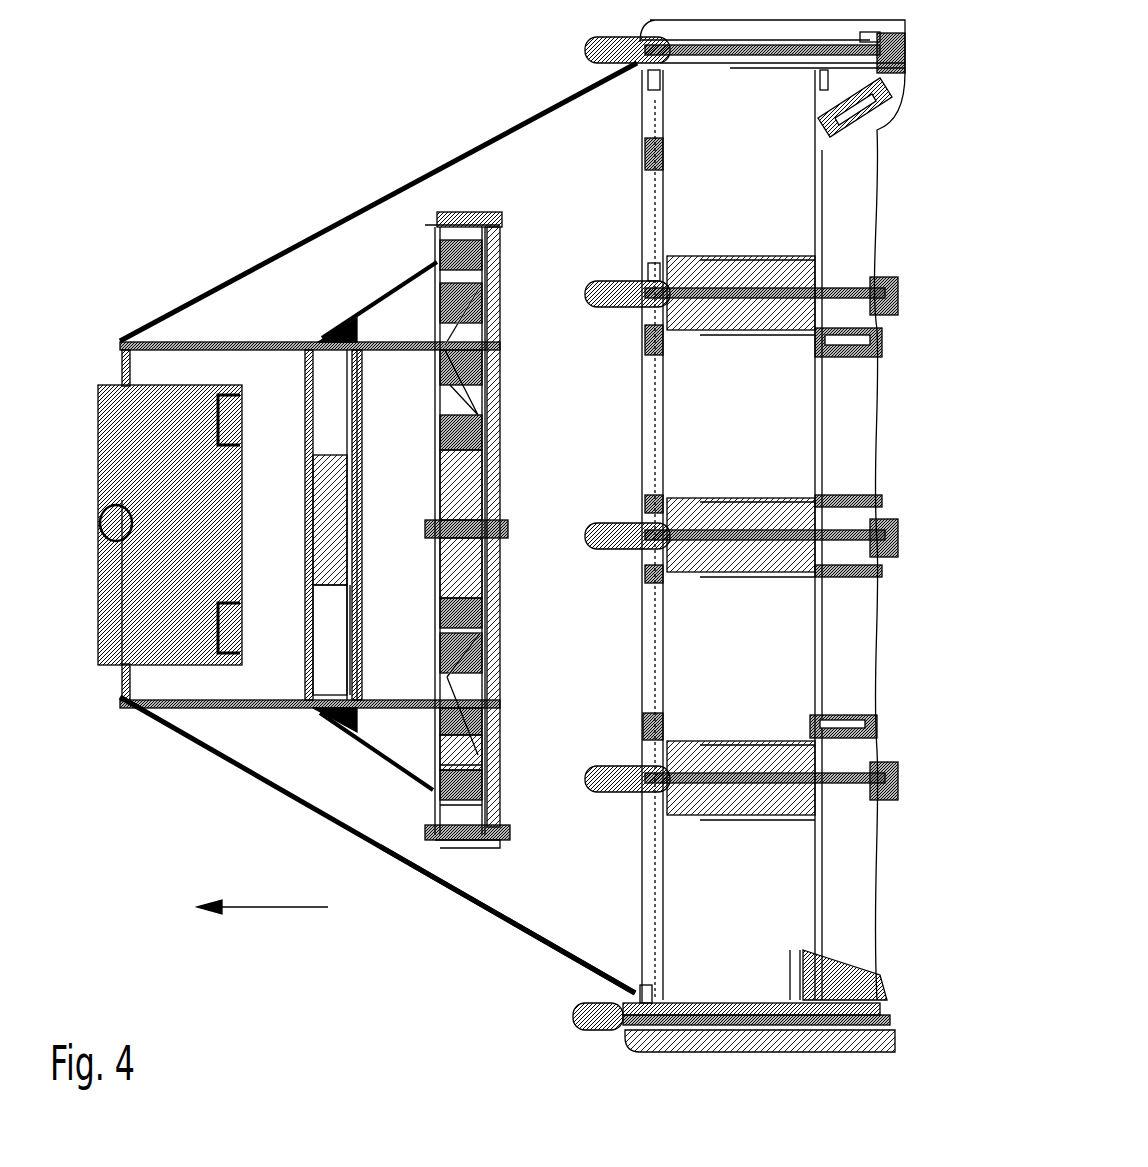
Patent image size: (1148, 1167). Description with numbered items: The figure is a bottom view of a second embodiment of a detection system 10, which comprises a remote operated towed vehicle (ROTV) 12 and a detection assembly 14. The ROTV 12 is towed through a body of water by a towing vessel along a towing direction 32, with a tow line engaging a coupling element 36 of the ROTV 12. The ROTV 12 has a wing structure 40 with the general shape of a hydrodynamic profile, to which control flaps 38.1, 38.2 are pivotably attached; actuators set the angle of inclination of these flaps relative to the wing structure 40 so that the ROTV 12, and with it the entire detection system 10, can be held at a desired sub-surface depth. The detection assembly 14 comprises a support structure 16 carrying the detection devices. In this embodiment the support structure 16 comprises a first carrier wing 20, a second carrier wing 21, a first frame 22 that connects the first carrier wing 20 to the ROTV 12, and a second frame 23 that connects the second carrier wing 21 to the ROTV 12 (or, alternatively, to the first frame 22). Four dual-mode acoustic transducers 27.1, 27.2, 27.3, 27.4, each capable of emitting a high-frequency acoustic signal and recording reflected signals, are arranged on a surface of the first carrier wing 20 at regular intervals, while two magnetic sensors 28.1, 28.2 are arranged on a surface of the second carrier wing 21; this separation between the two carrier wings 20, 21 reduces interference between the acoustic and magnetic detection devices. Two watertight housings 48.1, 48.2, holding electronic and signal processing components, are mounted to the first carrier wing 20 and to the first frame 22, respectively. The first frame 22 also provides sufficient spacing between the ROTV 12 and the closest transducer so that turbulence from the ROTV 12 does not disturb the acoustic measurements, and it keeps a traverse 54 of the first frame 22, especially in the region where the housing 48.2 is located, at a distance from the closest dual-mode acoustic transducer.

The detection system 10 is at (280, 78).
The remote operated towed vehicle (ROTV) 12 is at (104, 370).
The detection assembly 14 is at (512, 65).
The support structure 16 is at (245, 780).
The first carrier wing 20 is at (497, 570).
The second carrier wing 21 is at (875, 200).
The first frame 22 is at (370, 743).
The second frame 23 is at (480, 907).
The dual-mode acoustic transducer 27.1 is at (483, 262).
The dual-mode acoustic transducer 27.2 is at (483, 437).
The dual-mode acoustic transducer 27.3 is at (467, 617).
The dual-mode acoustic transducer 27.4 is at (482, 792).
The magnetic sensor 28.1 is at (855, 112).
The magnetic sensor 28.2 is at (847, 963).
The towing direction 32 is at (268, 910).
The coupling element 36 is at (98, 523).
The control flap 38.1 is at (236, 412).
The control flap 38.2 is at (236, 618).
The wing structure 40 is at (100, 444).
The watertight housing 48.1 is at (425, 528).
The watertight housing 48.2 is at (330, 596).
The traverse 54 is at (362, 625).